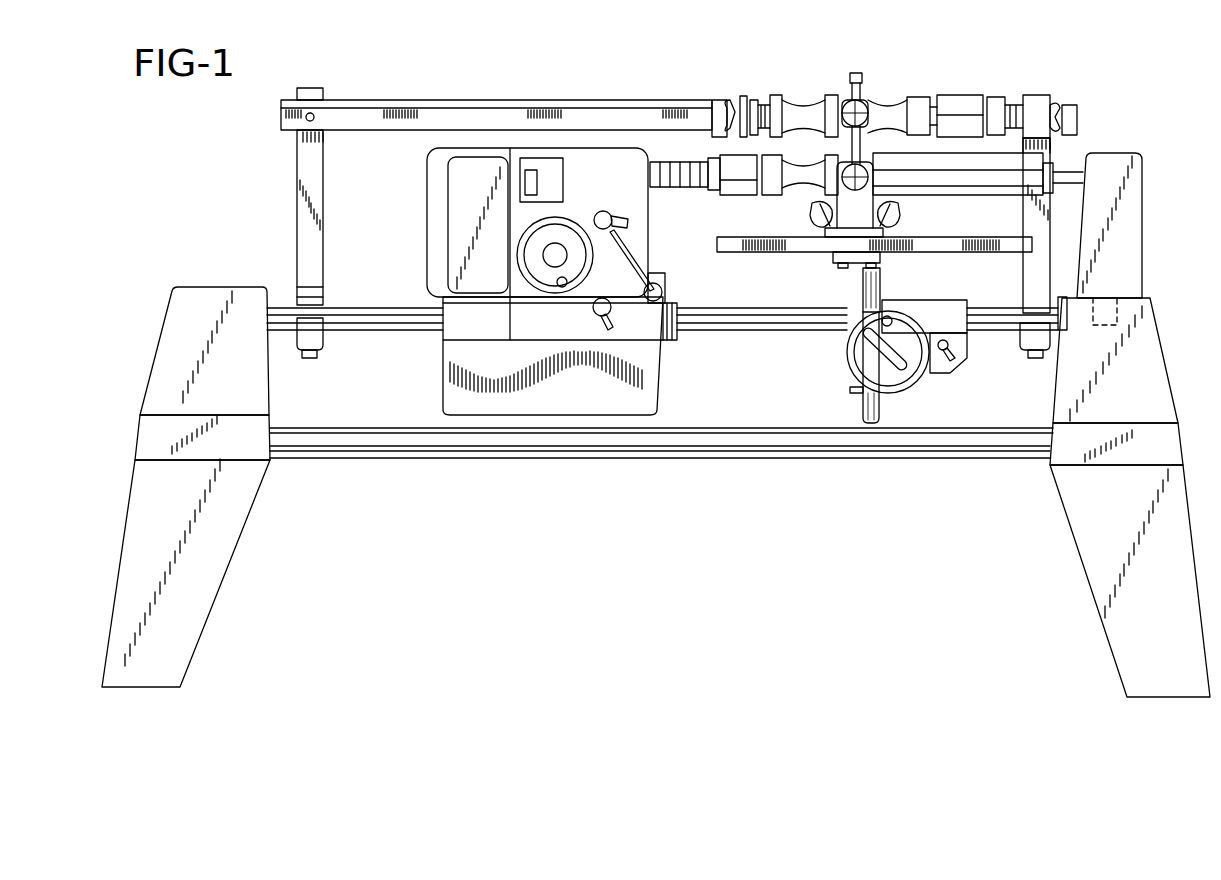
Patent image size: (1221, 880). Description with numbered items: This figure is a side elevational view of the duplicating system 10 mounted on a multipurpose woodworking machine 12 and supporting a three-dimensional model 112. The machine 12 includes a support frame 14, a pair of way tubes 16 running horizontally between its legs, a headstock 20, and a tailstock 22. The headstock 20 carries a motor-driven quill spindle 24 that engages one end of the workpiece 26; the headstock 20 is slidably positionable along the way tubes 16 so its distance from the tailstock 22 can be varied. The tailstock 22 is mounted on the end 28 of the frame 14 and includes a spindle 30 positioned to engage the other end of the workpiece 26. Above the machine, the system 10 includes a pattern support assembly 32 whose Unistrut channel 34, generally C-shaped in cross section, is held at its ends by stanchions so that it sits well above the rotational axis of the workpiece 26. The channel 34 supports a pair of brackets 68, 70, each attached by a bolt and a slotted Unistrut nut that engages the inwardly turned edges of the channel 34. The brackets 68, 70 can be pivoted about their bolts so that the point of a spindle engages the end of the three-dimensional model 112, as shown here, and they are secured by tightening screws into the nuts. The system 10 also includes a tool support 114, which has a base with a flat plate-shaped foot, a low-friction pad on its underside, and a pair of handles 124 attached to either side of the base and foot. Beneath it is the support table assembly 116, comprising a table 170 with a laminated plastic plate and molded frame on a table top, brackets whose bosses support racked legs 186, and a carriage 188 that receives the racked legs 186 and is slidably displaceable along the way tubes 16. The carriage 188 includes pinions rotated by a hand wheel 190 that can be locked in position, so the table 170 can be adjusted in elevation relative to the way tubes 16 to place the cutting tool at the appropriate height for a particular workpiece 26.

The duplicating system 10 is at (739, 97).
The multipurpose woodworking machine 12 is at (204, 289).
The support frame 14 is at (1073, 495).
The way tube 16 is at (703, 328).
The headstock 20 is at (632, 238).
The tailstock 22 is at (1135, 207).
The motor-driven quill spindle 24 is at (690, 173).
The workpiece 26 is at (958, 183).
The end of the frame 28 is at (1073, 357).
The spindle 30 is at (1070, 167).
The pattern support assembly 32 is at (558, 102).
The Unistrut channel 34 is at (440, 115).
The bracket 68 is at (722, 100).
The bracket 70 is at (1050, 110).
The three-dimensional model 112 is at (953, 100).
The tool support 114 is at (807, 212).
The support table assembly 116 is at (849, 366).
The handles 124 is at (812, 226).
The table 170 is at (747, 250).
The racked legs 186 is at (863, 291).
The carriage 188 is at (938, 297).
The hand wheel 190 is at (903, 393).